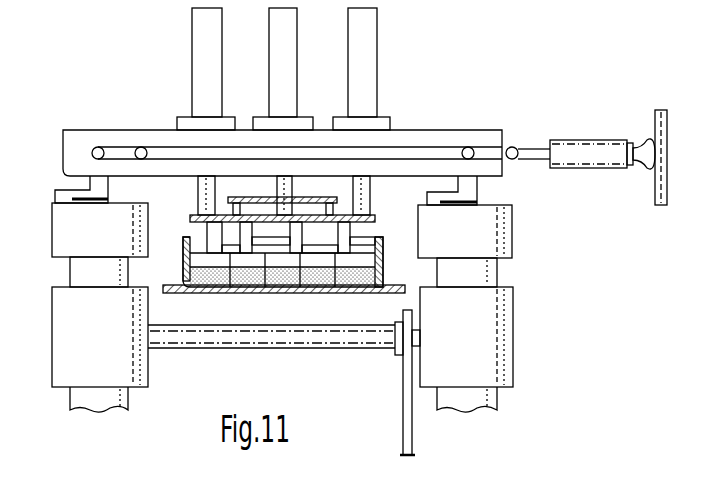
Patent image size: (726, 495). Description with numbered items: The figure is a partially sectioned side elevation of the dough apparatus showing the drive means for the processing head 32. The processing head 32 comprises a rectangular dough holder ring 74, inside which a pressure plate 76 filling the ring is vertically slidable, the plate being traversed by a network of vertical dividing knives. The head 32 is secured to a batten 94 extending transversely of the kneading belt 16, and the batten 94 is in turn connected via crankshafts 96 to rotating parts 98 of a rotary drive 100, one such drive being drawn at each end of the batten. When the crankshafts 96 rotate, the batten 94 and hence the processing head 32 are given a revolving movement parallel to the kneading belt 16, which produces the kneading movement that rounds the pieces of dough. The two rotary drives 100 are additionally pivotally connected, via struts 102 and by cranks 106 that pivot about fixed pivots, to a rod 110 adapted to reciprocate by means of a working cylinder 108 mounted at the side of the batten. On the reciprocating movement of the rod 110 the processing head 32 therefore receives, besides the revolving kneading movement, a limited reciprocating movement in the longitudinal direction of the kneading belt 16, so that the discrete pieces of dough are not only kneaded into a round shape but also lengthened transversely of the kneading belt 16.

The kneading belt 16 is at (373, 291).
The processing head 32 is at (381, 111).
The dough holder ring 74 is at (384, 238).
The pressure plate 76 is at (246, 265).
The batten 94 is at (400, 137).
The crankshafts 96 is at (76, 194).
The rotating parts 98 is at (65, 238).
The rotary drive 100 is at (65, 335).
The struts 102 is at (96, 147).
The cranks 106 is at (140, 147).
The working cylinder 108 is at (600, 158).
The rod 110 is at (245, 150).